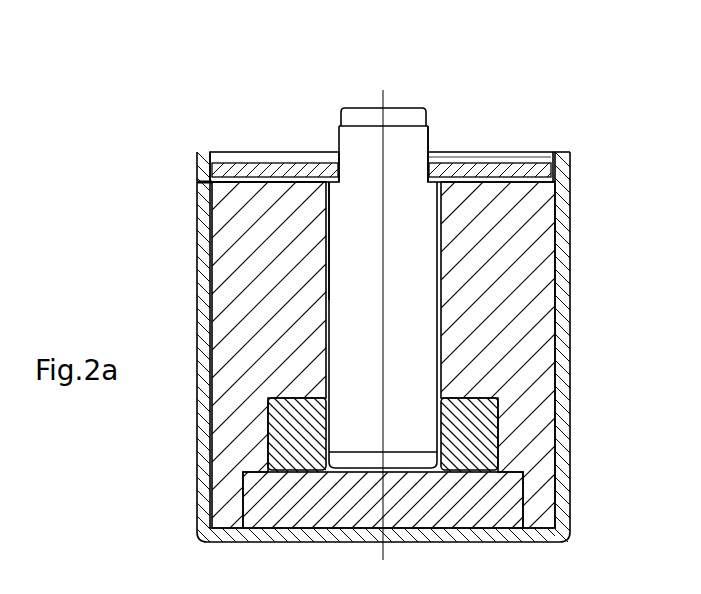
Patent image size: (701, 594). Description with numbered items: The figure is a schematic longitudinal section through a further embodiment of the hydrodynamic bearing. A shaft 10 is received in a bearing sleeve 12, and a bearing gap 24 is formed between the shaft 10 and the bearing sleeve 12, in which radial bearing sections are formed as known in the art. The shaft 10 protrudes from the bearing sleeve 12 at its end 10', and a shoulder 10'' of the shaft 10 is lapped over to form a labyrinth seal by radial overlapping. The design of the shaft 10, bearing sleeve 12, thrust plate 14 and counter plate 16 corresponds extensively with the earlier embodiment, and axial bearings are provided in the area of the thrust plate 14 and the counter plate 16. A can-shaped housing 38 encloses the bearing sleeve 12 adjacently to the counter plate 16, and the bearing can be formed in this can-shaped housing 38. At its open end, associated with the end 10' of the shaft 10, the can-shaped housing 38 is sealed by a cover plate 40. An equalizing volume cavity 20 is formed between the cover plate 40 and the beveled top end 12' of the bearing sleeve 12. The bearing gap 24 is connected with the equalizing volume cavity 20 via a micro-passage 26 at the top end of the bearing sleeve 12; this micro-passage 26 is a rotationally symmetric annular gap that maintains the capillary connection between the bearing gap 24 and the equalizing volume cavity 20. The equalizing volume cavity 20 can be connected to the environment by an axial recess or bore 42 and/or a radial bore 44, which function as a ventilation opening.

The shaft 10 is at (495, 427).
The end of shaft 10' is at (445, 101).
The shoulder of shaft 10'' is at (299, 160).
The bearing sleeve 12 is at (435, 355).
The top end of bearing sleeve 12' is at (264, 101).
The thrust plate 14 is at (497, 456).
The counter plate 16 is at (478, 508).
The equalizing volume cavity 20 is at (552, 180).
The bearing gap 24 is at (445, 313).
The micro-passage 26 is at (463, 170).
The can-shaped housing 38 is at (571, 368).
The cover plate 40 is at (518, 168).
The axial recess or bore 42 is at (560, 164).
The radial bore 44 is at (192, 182).